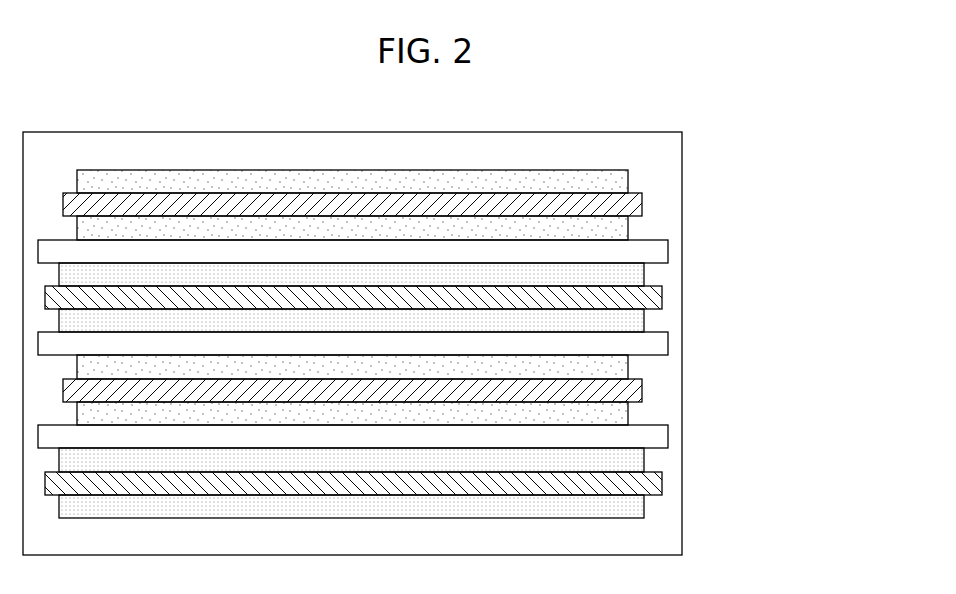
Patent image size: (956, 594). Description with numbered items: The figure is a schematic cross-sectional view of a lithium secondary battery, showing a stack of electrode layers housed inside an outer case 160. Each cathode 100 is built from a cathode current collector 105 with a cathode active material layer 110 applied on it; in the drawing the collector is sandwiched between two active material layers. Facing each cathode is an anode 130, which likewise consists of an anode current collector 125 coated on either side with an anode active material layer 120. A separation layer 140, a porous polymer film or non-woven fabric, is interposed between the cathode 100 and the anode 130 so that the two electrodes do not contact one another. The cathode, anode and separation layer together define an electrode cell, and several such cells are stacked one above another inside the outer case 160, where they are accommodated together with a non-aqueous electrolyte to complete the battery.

The cathode 100 is at (444, 297).
The cathode current collector 105 is at (642, 205).
The cathode active material layer 110 is at (628, 181).
The anode active material layer 120 is at (644, 273).
The anode current collector 125 is at (662, 297).
The anode 130 is at (435, 390).
The separation layer 140 is at (546, 246).
The outer case 160 is at (682, 481).